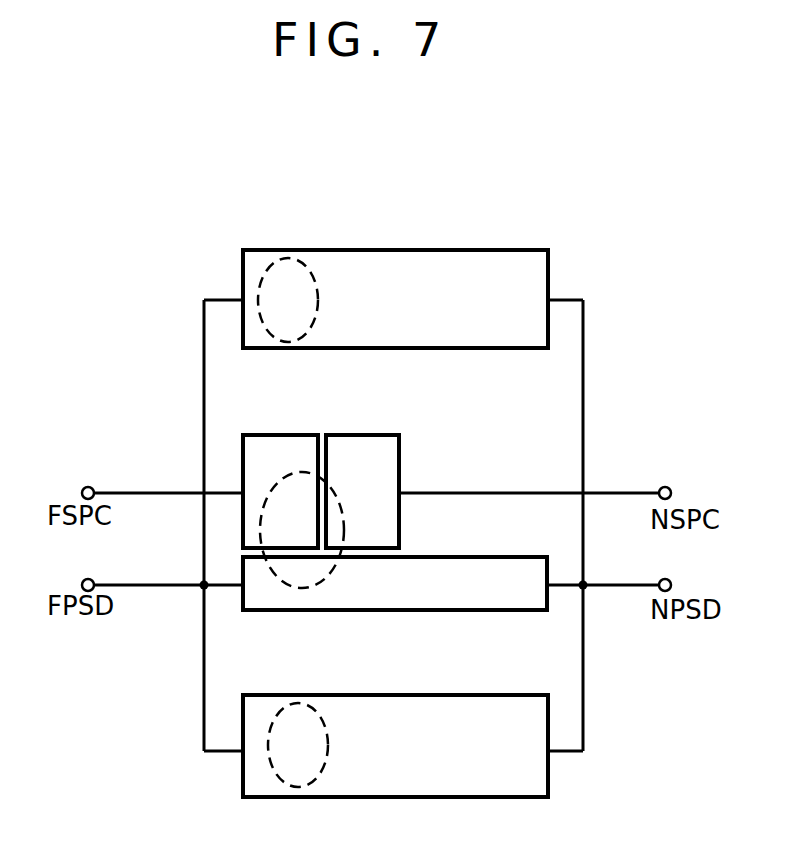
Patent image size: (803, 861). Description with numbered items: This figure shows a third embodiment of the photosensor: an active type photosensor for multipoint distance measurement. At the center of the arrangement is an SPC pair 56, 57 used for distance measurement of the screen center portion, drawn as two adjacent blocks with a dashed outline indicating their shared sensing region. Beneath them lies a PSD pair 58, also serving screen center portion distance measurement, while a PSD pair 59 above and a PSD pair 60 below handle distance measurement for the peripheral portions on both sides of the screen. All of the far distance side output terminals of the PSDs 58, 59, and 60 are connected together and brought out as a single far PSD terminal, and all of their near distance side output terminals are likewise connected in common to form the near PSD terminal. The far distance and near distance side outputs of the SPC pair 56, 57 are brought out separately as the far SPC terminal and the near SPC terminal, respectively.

The SPC pair element 56 is at (275, 444).
The SPC pair element 57 is at (388, 442).
The PSD pair 58 is at (458, 598).
The PSD pair 59 is at (455, 262).
The PSD pair 60 is at (441, 785).